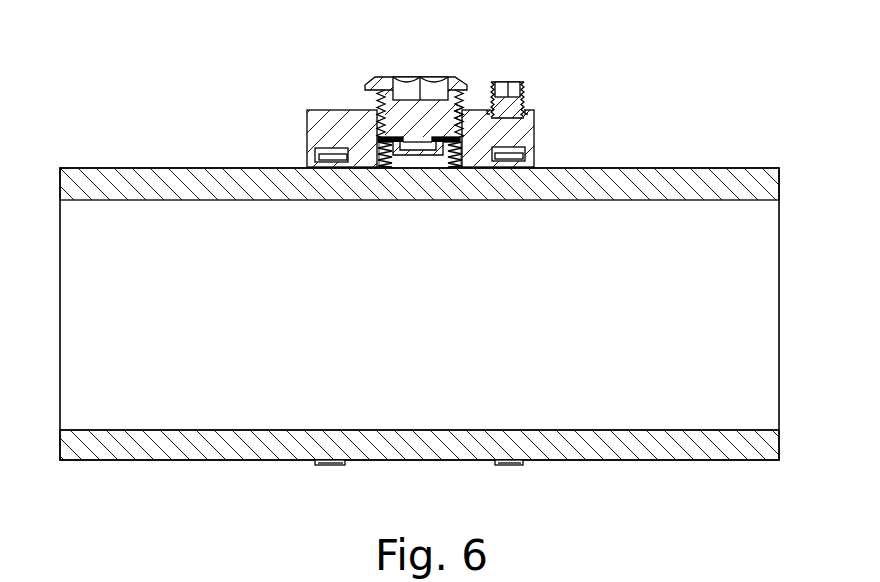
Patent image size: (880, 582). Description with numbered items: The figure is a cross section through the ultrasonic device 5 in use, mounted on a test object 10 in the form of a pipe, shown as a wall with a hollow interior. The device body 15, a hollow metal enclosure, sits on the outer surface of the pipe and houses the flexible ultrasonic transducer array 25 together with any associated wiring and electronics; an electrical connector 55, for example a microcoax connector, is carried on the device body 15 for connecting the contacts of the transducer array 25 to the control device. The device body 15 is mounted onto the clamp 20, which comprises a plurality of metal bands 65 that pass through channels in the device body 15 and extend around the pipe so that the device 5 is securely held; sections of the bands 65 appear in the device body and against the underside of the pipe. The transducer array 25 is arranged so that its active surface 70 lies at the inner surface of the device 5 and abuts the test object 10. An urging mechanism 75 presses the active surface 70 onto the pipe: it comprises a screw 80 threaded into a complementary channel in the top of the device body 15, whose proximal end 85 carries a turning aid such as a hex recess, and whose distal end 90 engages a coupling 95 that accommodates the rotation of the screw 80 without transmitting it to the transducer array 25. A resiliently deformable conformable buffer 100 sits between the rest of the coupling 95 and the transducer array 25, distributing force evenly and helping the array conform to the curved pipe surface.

The ultrasonic device 5 is at (598, 62).
The test object 10 is at (80, 443).
The device body 15 is at (317, 122).
The clamp 20 is at (520, 463).
The ultrasonic transducer array 25 is at (460, 156).
The electrical connector 55 is at (503, 81).
The bands 65 is at (322, 158).
The active surface 70 is at (428, 166).
The urging mechanism 75 is at (367, 89).
The screw 80 is at (460, 103).
The proximal end 85 is at (397, 77).
The distal end 90 is at (392, 156).
The coupling 95 is at (457, 132).
The conformable buffer 100 is at (437, 158).